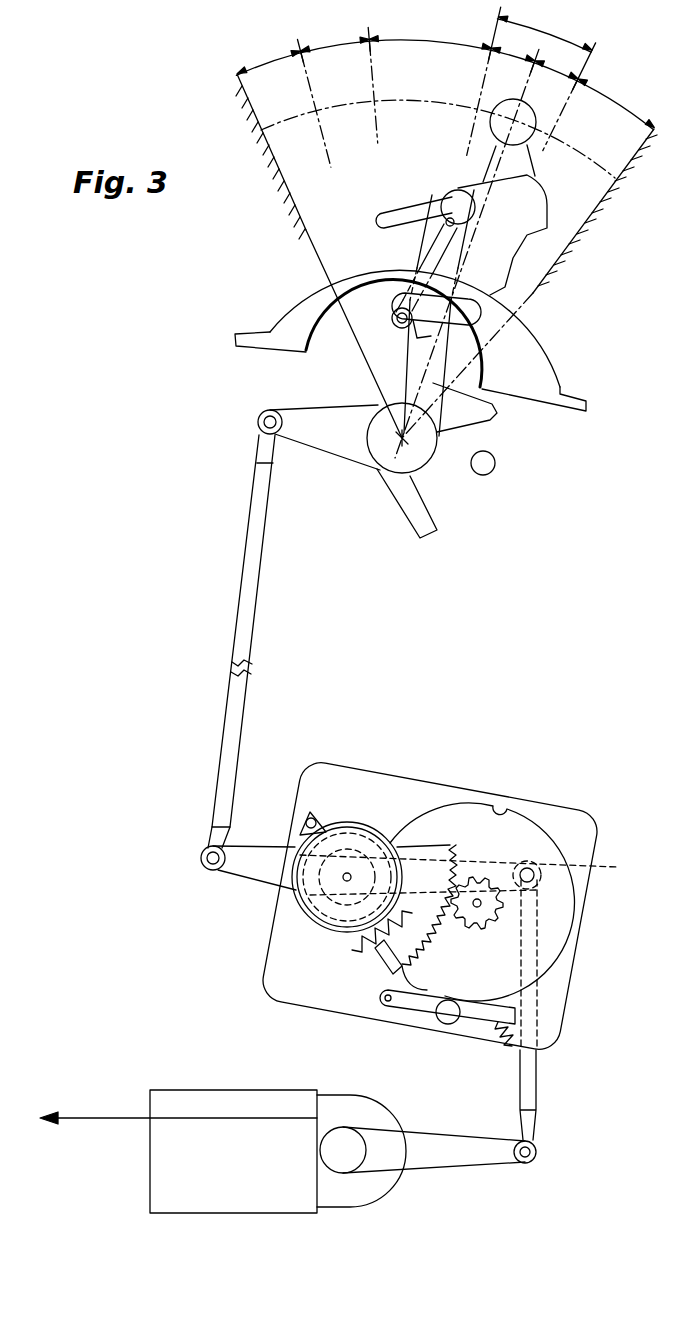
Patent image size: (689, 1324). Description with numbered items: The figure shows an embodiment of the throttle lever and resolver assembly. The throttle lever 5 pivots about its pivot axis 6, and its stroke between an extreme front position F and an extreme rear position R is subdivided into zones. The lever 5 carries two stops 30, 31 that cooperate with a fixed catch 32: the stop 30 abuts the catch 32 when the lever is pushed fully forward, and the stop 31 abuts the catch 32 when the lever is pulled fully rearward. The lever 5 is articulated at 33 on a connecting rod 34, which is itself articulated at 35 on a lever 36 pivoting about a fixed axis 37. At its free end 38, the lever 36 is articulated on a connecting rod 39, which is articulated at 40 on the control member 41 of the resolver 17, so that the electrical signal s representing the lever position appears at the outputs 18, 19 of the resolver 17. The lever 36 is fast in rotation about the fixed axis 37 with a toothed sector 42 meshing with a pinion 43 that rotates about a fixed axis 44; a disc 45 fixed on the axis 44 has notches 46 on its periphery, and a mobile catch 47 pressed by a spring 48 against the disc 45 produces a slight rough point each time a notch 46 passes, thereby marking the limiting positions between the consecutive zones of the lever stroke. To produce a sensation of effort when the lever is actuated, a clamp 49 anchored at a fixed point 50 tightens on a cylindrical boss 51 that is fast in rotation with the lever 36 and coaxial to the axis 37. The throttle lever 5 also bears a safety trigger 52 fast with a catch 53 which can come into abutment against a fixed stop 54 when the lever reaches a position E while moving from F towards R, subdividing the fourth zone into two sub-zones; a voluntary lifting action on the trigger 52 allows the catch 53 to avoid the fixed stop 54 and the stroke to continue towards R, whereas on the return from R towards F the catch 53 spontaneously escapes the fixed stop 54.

The throttle lever 5 is at (527, 160).
The pivot axis 6 is at (420, 450).
The resolver 17 is at (232, 1102).
The resolver output 18 is at (90, 1117).
The resolver output 19 is at (173, 1101).
The stop 30 is at (422, 527).
The stop 31 is at (497, 412).
The fixed catch 32 is at (495, 468).
The articulation 33 is at (258, 424).
The connecting rod 34 is at (237, 638).
The articulation 35 is at (201, 861).
The lever 36 is at (243, 858).
The fixed axis 37 is at (345, 880).
The free end 38 is at (475, 872).
The connecting rod 39 is at (537, 1083).
The articulation 40 is at (536, 1160).
The control member 41 is at (483, 1157).
The toothed sector 42 is at (397, 952).
The pinion 43 is at (467, 873).
The fixed axis 44 is at (483, 917).
The disc 45 is at (437, 820).
The notches 46 is at (553, 843).
The mobile catch 47 is at (448, 1024).
The spring 48 is at (507, 1047).
The clamp 49 is at (357, 822).
The fixed point 50 is at (312, 818).
The cylindrical boss 51 is at (343, 913).
The safety trigger 52 is at (402, 214).
The catch 53 is at (394, 324).
The fixed stop 54 is at (413, 332).